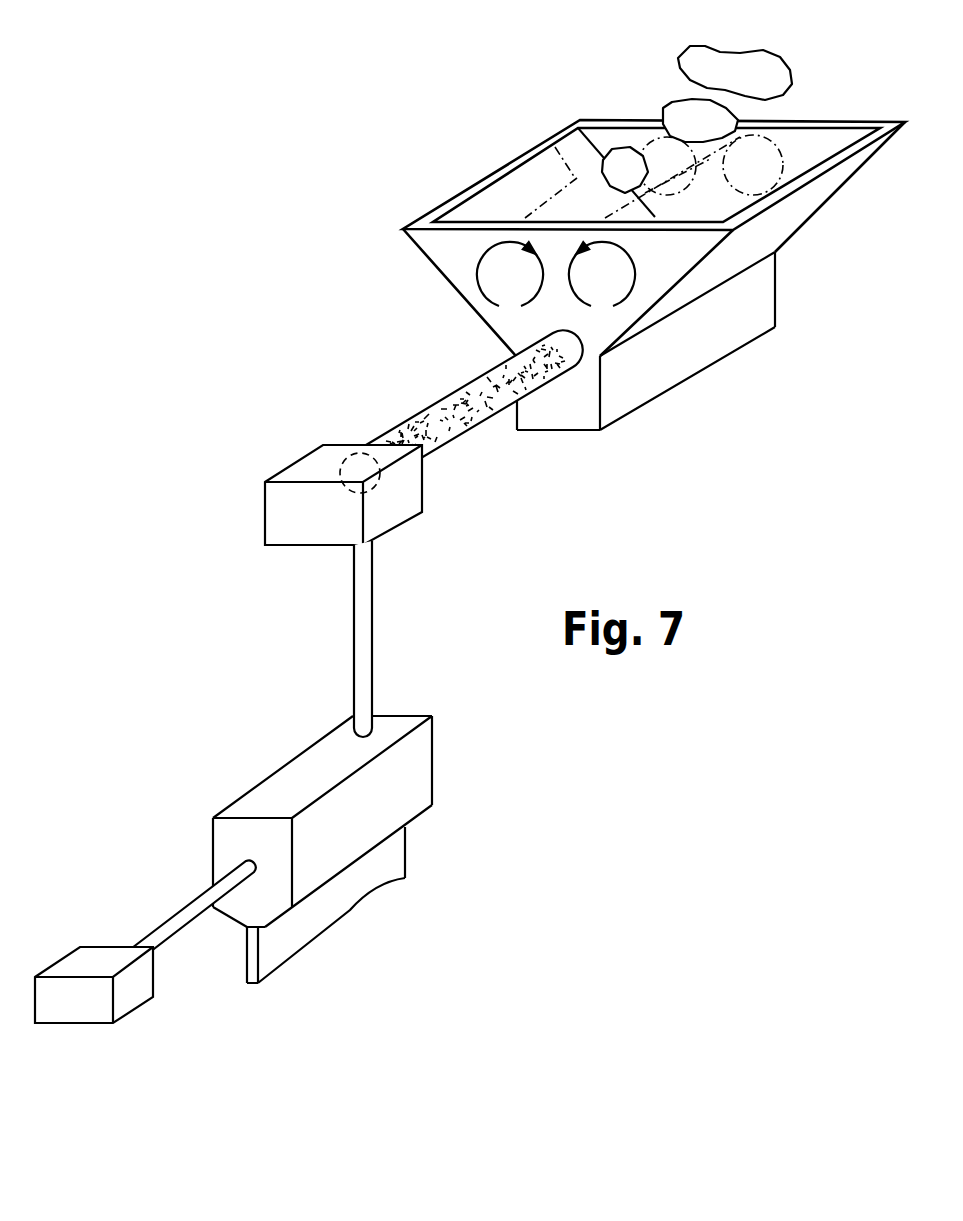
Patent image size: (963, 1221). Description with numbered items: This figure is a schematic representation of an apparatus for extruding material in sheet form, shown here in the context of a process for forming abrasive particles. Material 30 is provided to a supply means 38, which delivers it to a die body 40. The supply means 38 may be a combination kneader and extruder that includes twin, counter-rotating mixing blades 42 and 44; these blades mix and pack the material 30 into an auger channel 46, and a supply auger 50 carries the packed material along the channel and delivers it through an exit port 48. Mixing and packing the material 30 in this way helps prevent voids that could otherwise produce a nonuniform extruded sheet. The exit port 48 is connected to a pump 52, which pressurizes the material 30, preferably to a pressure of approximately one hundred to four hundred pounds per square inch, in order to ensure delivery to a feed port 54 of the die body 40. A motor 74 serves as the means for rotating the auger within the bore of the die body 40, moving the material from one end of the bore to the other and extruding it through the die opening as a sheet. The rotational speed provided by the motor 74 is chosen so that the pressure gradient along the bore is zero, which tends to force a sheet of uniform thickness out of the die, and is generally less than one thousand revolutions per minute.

The material 30 is at (687, 108).
The supply means 38 is at (773, 311).
The die body 40 is at (420, 790).
The mixing blade 42 is at (547, 137).
The mixing blade 44 is at (792, 132).
The auger channel 46 is at (433, 406).
The exit port 48 is at (383, 488).
The supply auger 50 is at (469, 378).
The pump 52 is at (298, 506).
The feed port 54 is at (353, 724).
The motor 74 is at (132, 995).